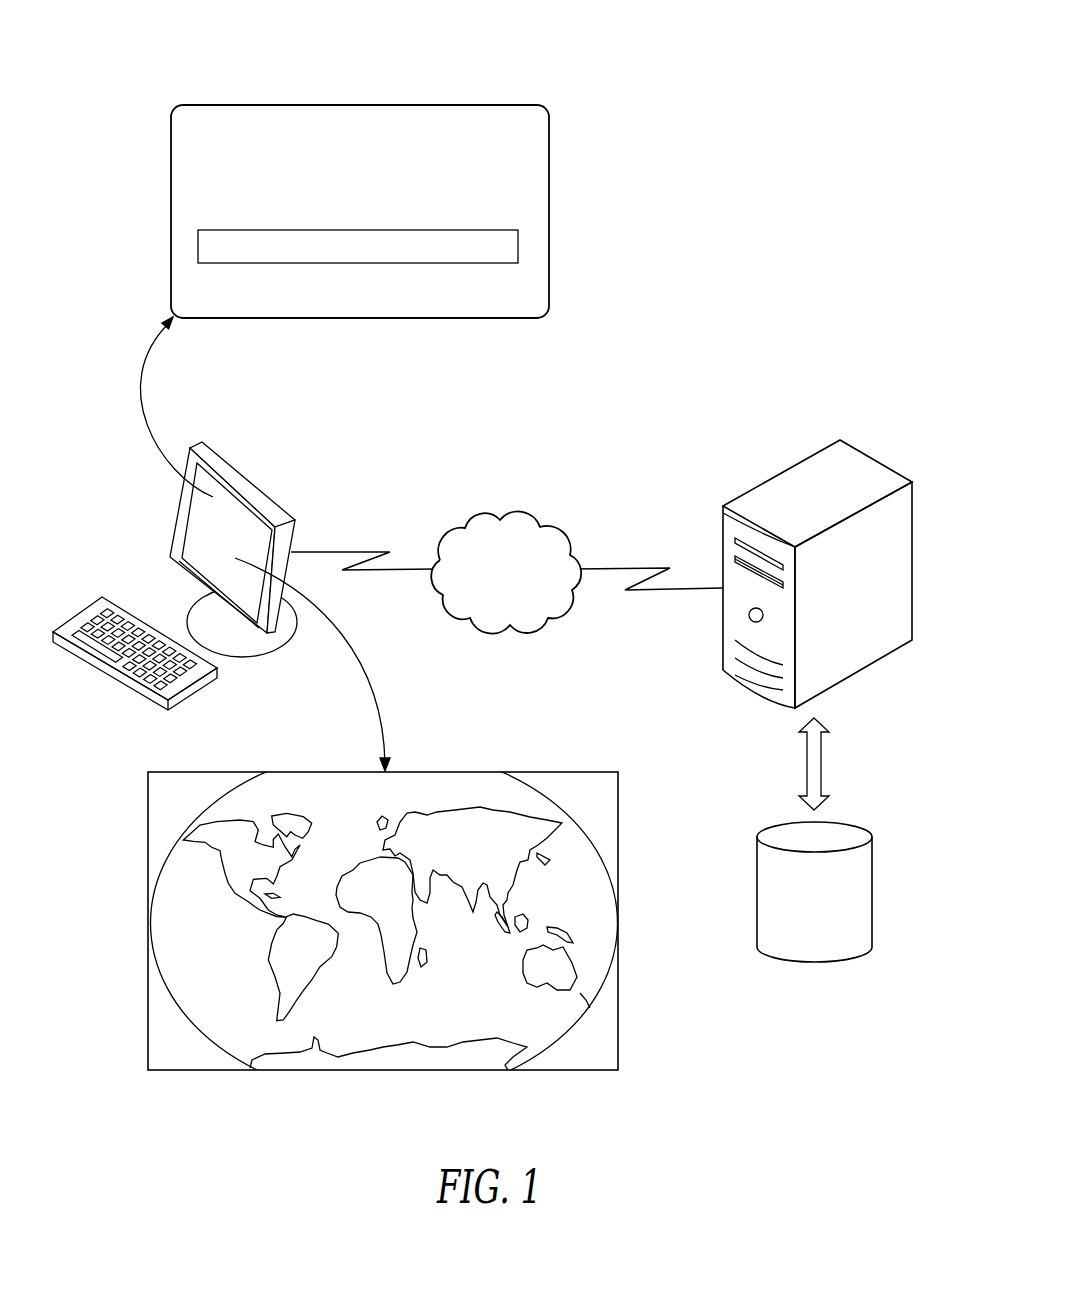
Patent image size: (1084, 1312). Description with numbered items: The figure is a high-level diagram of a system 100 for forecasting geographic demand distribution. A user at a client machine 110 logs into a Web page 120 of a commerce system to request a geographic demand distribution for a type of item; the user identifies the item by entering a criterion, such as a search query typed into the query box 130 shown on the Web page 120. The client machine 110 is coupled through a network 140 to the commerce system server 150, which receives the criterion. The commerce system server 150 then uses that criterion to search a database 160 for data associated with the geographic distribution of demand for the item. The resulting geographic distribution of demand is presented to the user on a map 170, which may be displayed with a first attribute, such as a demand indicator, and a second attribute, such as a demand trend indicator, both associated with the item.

The system 100 is at (760, 57).
The client machine 110 is at (253, 472).
The Web page 120 is at (362, 105).
The query box 130 is at (360, 263).
The network 140 is at (507, 515).
The commerce system server 150 is at (782, 472).
The database 160 is at (838, 820).
The map 170 is at (385, 1072).